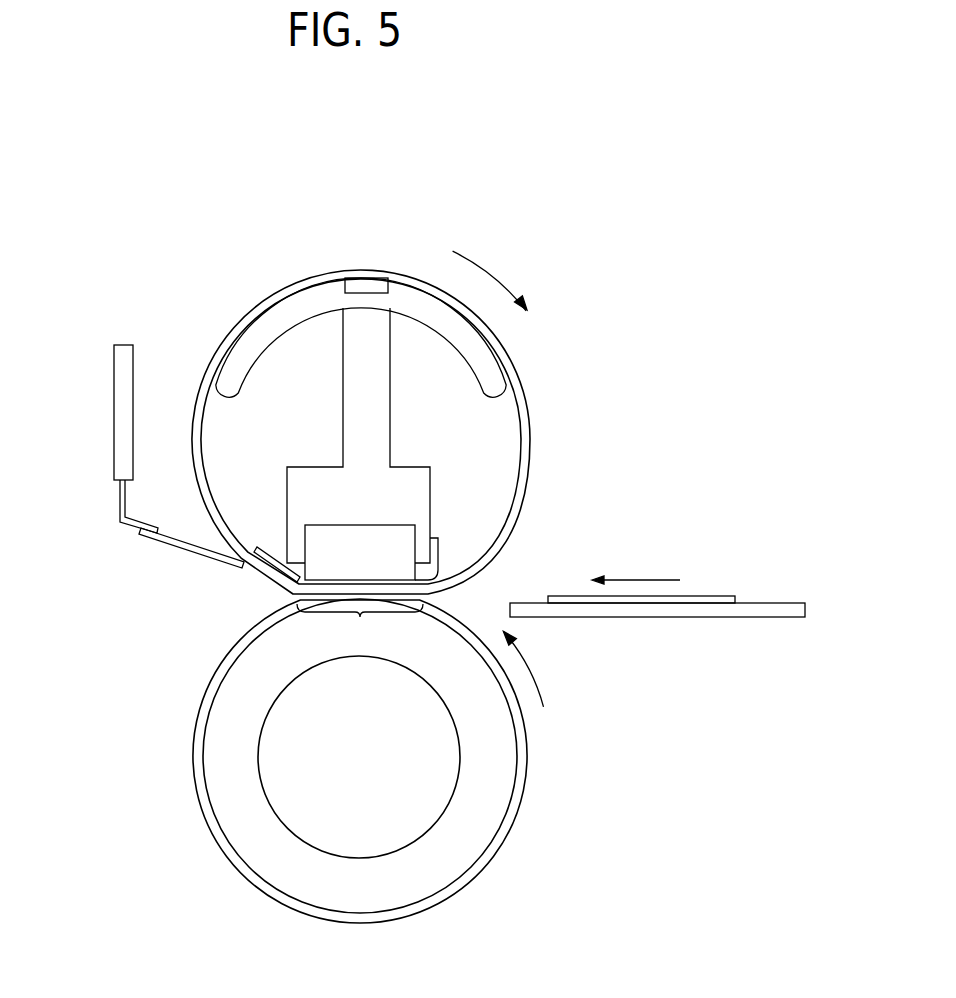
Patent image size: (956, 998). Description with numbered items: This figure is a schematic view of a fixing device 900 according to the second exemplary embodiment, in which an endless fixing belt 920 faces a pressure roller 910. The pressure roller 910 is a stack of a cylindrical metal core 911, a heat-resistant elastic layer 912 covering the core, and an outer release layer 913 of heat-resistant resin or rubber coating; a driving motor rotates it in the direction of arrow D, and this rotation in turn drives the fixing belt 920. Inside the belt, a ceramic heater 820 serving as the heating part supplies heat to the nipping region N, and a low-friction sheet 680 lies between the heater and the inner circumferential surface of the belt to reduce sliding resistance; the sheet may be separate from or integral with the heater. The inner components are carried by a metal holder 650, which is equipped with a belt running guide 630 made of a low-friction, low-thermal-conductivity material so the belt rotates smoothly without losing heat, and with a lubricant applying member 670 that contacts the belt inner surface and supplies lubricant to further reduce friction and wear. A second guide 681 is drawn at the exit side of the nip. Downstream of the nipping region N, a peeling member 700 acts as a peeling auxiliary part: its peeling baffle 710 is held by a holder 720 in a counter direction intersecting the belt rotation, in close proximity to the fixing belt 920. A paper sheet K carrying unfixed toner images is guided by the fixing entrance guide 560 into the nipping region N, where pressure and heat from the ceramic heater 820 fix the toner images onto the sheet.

The fixing device 900 is at (410, 180).
The fixing belt 920 is at (525, 460).
The lubricant applying member 670 is at (368, 284).
The belt running guide 630 is at (495, 367).
The holder 650 is at (303, 473).
The ceramic heater 820 is at (403, 533).
The low-friction sheet 680 is at (437, 555).
The belt guide (exit side) 681 is at (262, 566).
The nipping region N is at (360, 629).
The peeling member 700 is at (127, 547).
The holder 720 is at (120, 500).
The peeling baffle 710 is at (177, 542).
The pressure roller 910 is at (467, 886).
The release layer 913 is at (523, 753).
The heat-resistant elastic layer 912 is at (512, 787).
The core 911 is at (425, 818).
The rotation direction of pressure roller D is at (534, 668).
The fixing entrance guide 560 is at (750, 618).
The paper sheet K is at (736, 597).